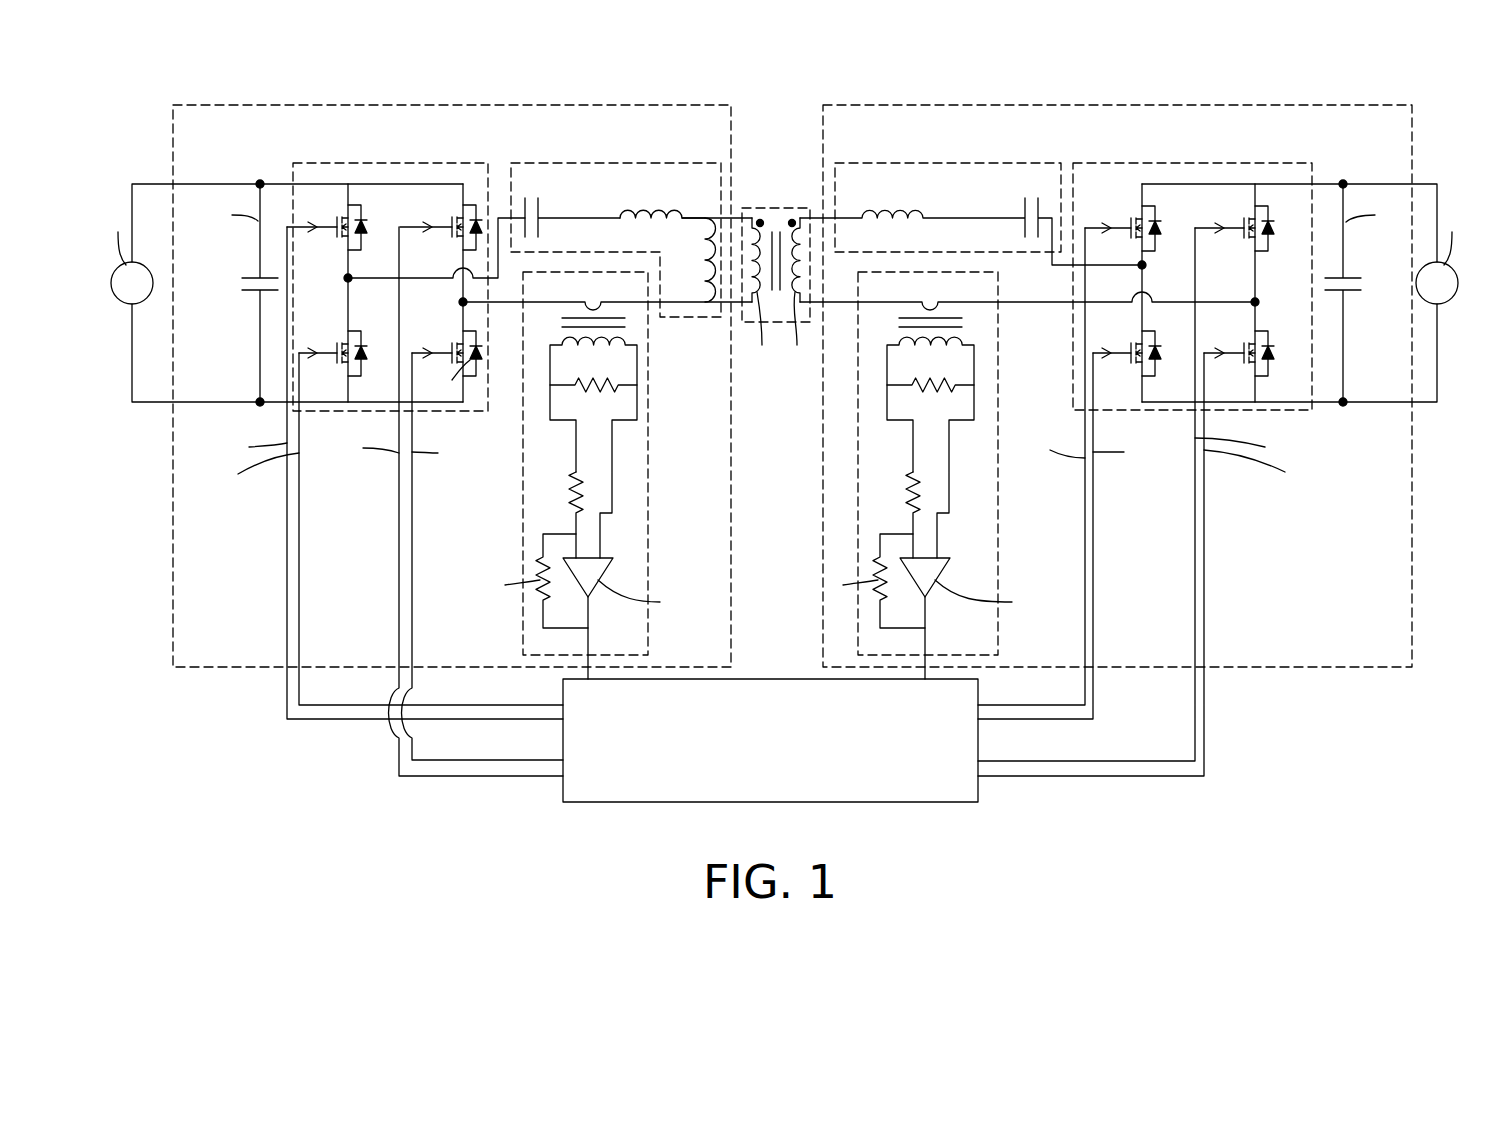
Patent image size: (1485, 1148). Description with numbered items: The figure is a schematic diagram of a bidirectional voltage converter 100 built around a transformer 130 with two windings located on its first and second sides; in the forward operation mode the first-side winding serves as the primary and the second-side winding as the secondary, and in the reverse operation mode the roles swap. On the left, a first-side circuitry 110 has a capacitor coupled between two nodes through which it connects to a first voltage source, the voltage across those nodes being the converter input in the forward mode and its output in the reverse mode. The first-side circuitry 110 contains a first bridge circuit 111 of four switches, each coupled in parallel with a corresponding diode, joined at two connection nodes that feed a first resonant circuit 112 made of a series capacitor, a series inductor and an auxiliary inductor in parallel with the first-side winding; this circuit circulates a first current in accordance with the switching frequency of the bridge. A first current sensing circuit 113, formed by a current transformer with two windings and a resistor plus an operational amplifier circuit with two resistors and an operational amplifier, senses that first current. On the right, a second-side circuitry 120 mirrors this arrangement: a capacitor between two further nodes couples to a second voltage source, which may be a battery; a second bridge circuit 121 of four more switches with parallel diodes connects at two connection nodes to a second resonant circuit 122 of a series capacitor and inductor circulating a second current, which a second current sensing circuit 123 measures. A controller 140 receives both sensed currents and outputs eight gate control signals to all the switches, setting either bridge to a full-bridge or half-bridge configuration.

The bidirectional voltage converter 100 is at (1412, 840).
The first-side circuitry 110 is at (243, 668).
The first bridge circuit 111 is at (325, 162).
The first resonant circuit 112 is at (607, 162).
The first current sensing circuit 113 is at (649, 500).
The second-side circuitry 120 is at (1323, 668).
The second bridge circuit 121 is at (1243, 162).
The second resonant circuit 122 is at (955, 162).
The second current sensing circuit 123 is at (999, 558).
The transformer 130 is at (775, 207).
The controller 140 is at (979, 793).